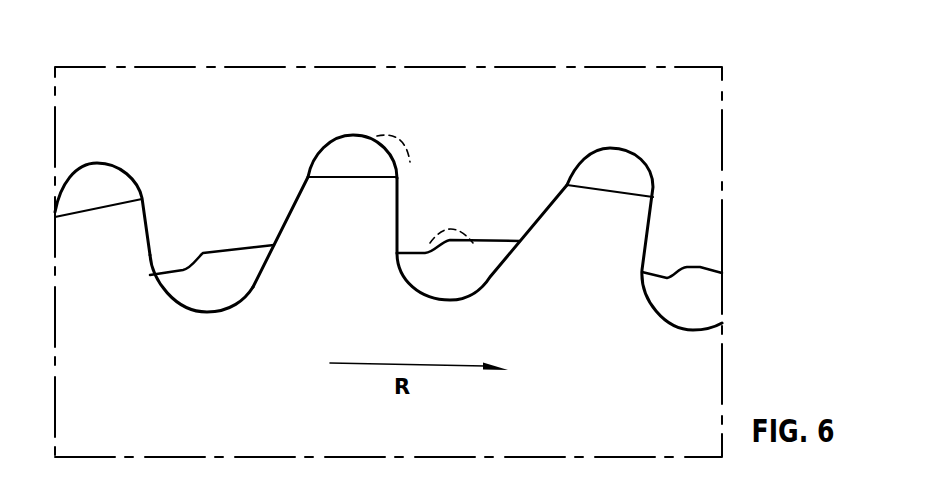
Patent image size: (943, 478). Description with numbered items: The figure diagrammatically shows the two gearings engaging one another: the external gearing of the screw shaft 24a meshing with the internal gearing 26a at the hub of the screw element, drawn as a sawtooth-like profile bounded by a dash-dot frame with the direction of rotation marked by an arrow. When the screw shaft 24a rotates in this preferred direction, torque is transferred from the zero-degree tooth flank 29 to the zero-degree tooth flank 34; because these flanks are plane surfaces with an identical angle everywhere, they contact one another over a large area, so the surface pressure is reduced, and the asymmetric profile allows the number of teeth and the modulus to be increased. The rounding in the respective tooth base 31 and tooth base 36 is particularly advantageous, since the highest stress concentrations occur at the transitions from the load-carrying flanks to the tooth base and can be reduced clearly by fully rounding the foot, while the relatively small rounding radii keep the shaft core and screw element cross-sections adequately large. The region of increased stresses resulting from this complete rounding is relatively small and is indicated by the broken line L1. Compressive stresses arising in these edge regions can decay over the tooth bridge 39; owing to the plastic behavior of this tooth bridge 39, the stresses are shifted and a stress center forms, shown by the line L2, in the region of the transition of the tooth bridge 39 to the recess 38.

The tooth base 36 is at (345, 118).
The broken line L1 is at (398, 131).
The 0° tooth flank 34 is at (410, 182).
The tooth bridge 39 is at (418, 251).
The line L2 is at (470, 227).
The 0° tooth flank 29 is at (393, 213).
The recess 38 is at (468, 258).
The tooth base 31 is at (209, 323).
The internal gearing 26a is at (705, 198).
The screw shaft 24a is at (698, 358).